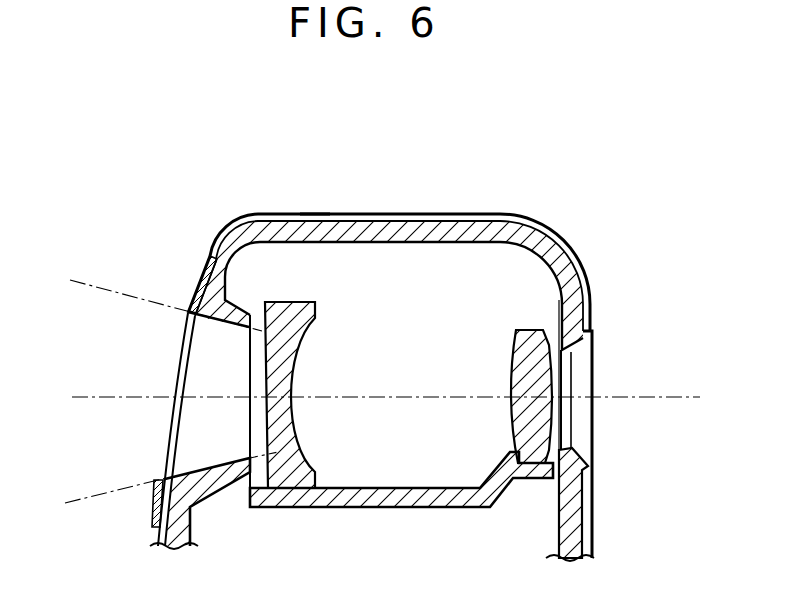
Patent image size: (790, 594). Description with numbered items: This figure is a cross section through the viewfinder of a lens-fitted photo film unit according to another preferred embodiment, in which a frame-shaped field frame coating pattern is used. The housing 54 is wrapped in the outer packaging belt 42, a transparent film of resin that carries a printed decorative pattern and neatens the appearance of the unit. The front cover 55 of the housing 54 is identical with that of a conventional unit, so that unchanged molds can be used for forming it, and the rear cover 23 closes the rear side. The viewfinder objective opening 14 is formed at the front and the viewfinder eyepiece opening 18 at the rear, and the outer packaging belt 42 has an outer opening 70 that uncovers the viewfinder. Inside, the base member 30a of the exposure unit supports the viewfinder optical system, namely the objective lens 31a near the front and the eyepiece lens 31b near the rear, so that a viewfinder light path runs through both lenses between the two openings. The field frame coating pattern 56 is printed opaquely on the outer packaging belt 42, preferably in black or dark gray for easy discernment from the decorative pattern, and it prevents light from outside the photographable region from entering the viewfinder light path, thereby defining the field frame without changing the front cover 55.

The viewfinder objective opening 14 is at (214, 322).
The viewfinder eyepiece opening 18 is at (573, 362).
The rear cover 23 is at (512, 230).
The base member 30a is at (409, 488).
The objective lens 31a is at (318, 305).
The eyepiece lens 31b is at (513, 330).
The outer packaging belt 42 is at (594, 300).
The housing 54 is at (415, 197).
The front cover 55 is at (312, 222).
The field frame coating pattern 56 is at (208, 268).
The outer opening 70 is at (161, 478).